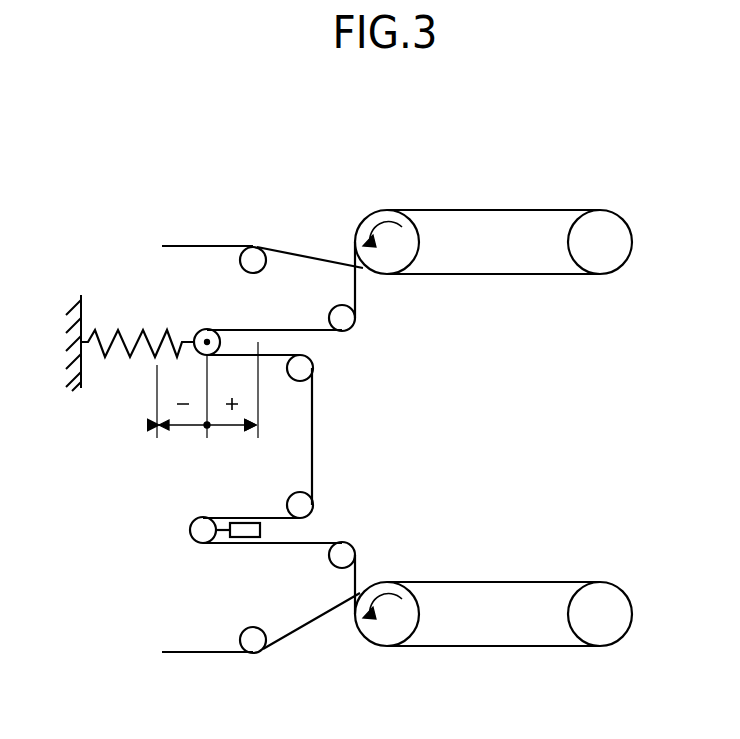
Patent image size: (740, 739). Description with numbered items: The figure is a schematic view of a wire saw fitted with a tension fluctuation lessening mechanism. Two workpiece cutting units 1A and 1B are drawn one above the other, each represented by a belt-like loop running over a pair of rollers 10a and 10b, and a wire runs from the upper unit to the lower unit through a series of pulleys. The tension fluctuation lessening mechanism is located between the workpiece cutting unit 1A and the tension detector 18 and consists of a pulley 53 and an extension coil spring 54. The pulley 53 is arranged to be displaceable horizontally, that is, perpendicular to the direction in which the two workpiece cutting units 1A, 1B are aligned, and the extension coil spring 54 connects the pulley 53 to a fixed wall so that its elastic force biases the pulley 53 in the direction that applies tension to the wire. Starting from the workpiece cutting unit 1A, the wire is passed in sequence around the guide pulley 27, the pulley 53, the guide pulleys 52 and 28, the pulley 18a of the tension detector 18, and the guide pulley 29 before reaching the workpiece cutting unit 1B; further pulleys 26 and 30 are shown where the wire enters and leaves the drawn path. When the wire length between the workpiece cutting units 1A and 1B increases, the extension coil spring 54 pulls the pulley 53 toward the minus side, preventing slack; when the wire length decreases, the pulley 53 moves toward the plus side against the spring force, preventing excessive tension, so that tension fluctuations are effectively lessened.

The workpiece cutting unit 1A is at (482, 193).
The workpiece cutting unit 1B is at (506, 562).
The drive roller 10a is at (382, 215).
The tension roller 10b is at (598, 213).
The tension detector 18 is at (251, 540).
The pulley of the tension detector 18a is at (201, 536).
The guide roller 26 is at (253, 248).
The guide pulley 27 is at (344, 318).
The guide pulley 28 is at (302, 505).
The guide pulley 29 is at (344, 555).
The guide roller 30 is at (253, 654).
The guide pulley 52 is at (302, 368).
The pulley 53 is at (204, 330).
The extension coil spring 54 is at (117, 303).